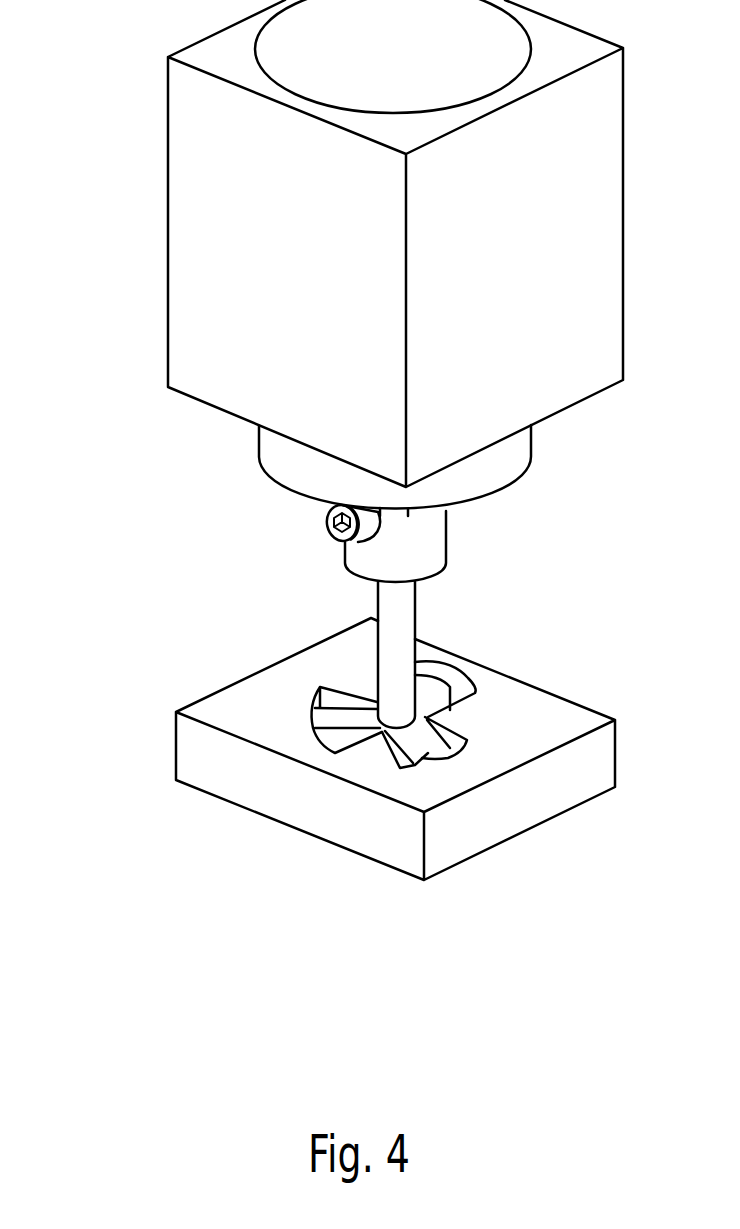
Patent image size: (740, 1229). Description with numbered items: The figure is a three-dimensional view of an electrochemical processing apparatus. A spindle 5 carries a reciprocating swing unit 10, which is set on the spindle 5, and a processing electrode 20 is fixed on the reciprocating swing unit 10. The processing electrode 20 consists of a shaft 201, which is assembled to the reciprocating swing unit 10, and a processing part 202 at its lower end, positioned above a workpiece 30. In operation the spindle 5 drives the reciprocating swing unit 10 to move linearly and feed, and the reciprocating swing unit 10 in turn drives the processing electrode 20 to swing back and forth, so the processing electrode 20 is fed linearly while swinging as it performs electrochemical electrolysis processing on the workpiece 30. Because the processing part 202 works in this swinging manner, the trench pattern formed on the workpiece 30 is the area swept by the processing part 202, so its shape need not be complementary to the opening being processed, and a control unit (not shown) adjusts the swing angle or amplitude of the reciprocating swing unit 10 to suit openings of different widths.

The spindle 5 is at (213, 225).
The reciprocating swing unit 10 is at (268, 445).
The processing electrode 20 is at (473, 608).
The shaft 201 is at (385, 595).
The processing part 202 is at (330, 720).
The workpiece 30 is at (200, 753).